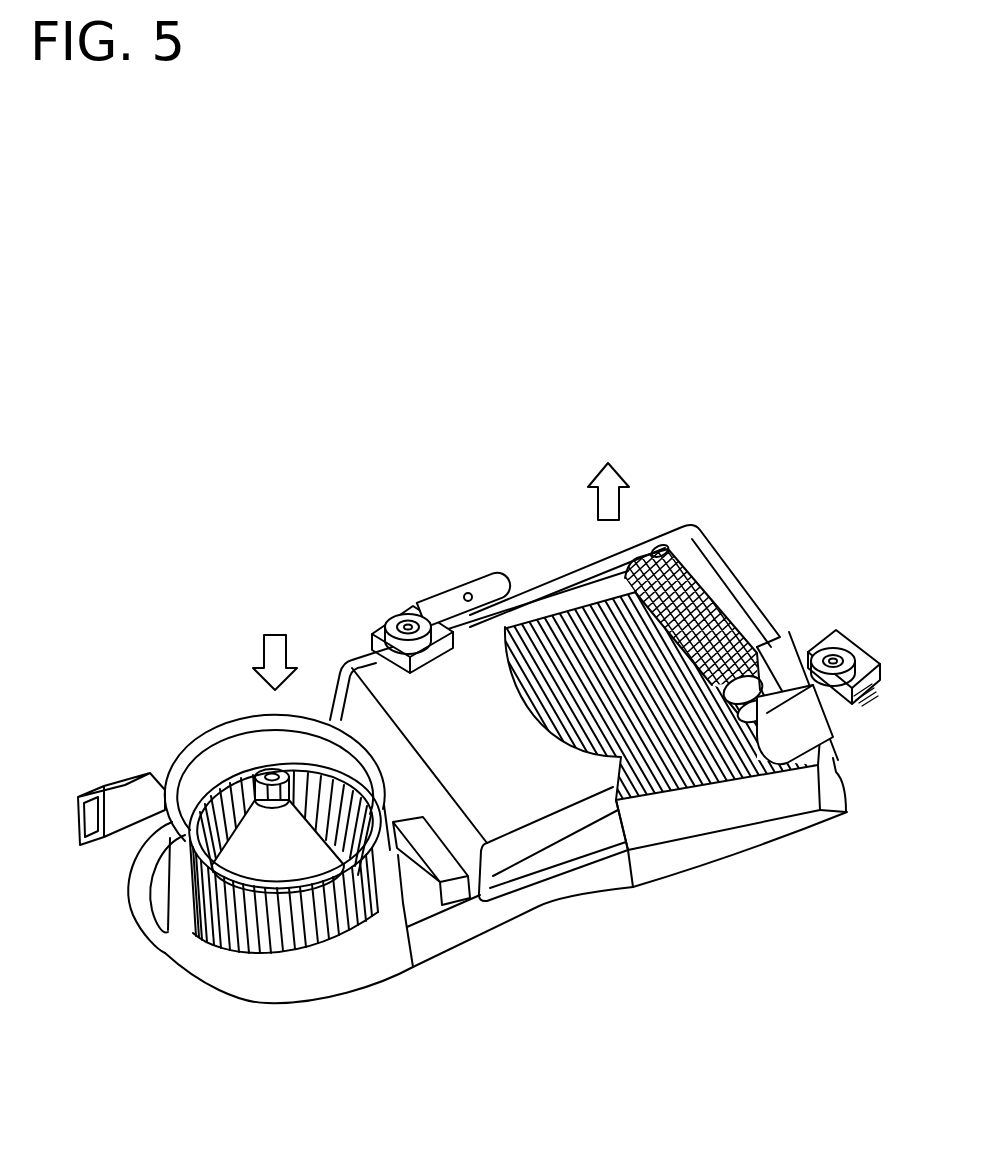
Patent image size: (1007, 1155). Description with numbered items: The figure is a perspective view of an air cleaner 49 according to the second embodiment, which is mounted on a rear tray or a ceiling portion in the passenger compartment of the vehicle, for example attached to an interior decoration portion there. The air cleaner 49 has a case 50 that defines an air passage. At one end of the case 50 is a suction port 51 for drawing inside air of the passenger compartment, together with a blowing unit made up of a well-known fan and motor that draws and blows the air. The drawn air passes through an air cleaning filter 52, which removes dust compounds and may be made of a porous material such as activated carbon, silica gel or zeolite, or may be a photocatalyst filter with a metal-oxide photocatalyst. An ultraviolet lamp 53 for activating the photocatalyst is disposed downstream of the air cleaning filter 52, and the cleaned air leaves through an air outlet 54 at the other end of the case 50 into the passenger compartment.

The air cleaner 49 is at (405, 590).
The case 50 is at (372, 992).
The suction port 51 is at (193, 734).
The air cleaning filter 52 is at (748, 827).
The ultraviolet lamp 53 is at (789, 632).
The air outlet 54 is at (560, 570).